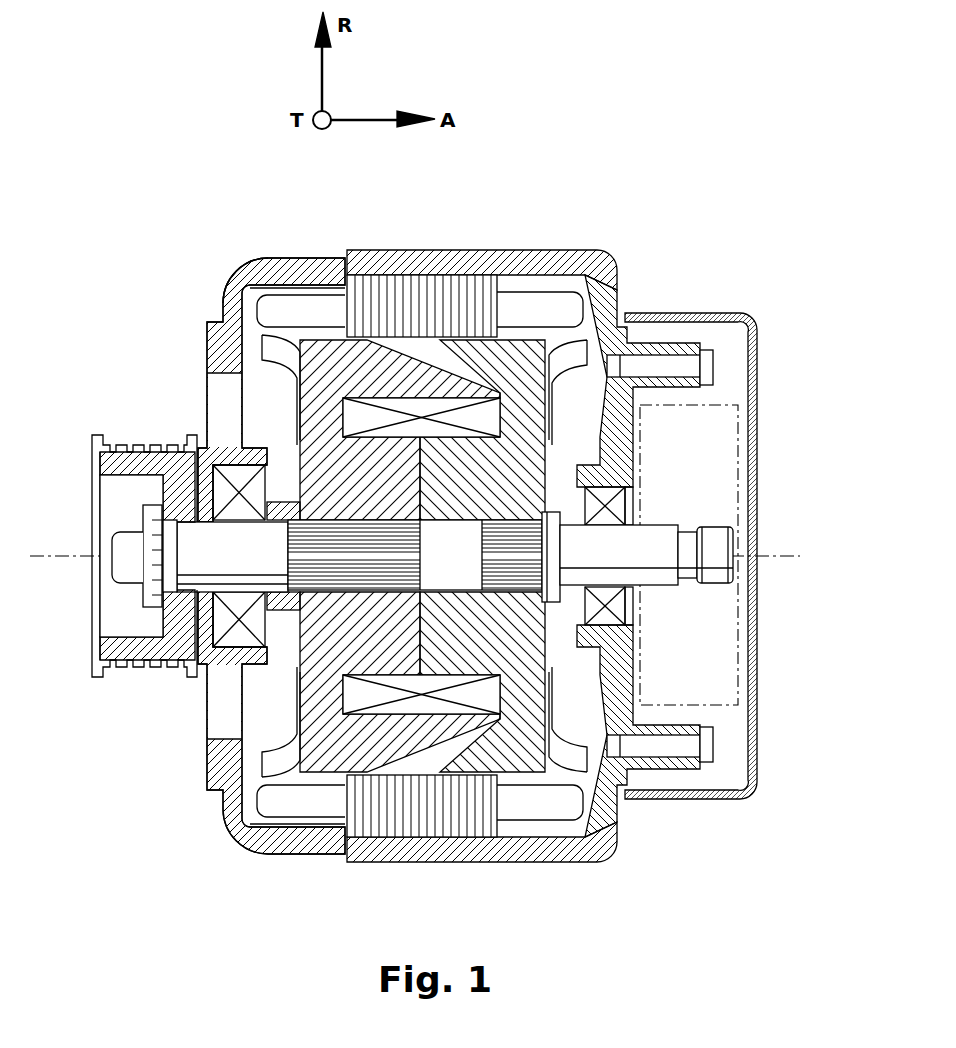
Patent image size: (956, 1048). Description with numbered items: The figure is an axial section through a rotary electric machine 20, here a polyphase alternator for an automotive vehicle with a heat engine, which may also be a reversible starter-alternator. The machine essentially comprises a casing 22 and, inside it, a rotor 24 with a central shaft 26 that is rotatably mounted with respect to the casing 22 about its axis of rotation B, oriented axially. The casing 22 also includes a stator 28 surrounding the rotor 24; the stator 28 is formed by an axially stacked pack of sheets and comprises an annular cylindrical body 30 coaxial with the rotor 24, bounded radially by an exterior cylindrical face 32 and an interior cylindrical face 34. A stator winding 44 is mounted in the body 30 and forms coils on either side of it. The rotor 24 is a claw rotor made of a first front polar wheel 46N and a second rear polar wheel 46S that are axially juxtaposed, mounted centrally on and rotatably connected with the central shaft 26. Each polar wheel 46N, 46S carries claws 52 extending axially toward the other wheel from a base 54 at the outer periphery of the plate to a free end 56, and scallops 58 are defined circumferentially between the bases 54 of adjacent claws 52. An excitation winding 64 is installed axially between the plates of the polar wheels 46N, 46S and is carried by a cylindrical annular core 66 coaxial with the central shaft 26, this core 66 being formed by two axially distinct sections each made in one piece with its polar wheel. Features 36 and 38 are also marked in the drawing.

The rotary electric machine 20 is at (730, 195).
The casing 22 is at (298, 278).
The rotor 24 is at (590, 252).
The central shaft 26 is at (658, 540).
The stator 28 is at (280, 310).
The annular cylindrical body 30 is at (460, 287).
The exterior cylindrical face 32 is at (392, 268).
The interior cylindrical face 34 is at (534, 328).
The rear cavity 36 is at (512, 296).
The housing inner wall 38 is at (345, 308).
The stator winding 44 is at (280, 258).
The first front polar wheel 46N is at (535, 440).
The second rear polar wheel 46S is at (295, 683).
The claws 52 is at (458, 785).
The base 54 is at (530, 725).
The free end 56 is at (367, 760).
The scallops 58 is at (353, 418).
The excitation winding 64 is at (350, 472).
The cylindrical annular core 66 is at (340, 460).
The axis of rotation B is at (781, 556).